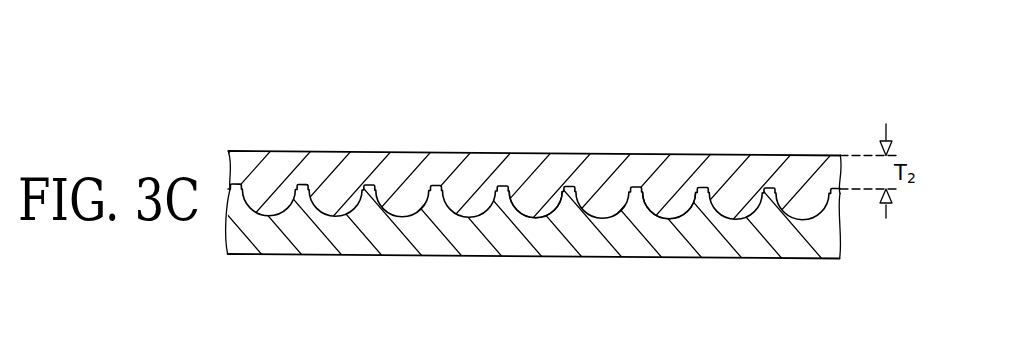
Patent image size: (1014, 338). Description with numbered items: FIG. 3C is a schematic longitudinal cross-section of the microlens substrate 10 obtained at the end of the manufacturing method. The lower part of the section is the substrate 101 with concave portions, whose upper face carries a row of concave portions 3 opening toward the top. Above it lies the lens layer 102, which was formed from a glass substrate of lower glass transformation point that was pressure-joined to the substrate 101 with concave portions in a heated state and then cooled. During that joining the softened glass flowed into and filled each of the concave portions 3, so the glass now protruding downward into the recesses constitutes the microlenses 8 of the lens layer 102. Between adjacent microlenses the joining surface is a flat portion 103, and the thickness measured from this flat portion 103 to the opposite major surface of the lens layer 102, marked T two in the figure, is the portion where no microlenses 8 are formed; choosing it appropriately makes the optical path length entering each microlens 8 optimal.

The microlens substrate 10 is at (520, 164).
The substrate with concave portions 101 is at (823, 237).
The lens layer 102 is at (808, 170).
The flat portion 103 is at (697, 186).
The microlenses 8 is at (532, 217).
The concave portions 3 is at (664, 218).